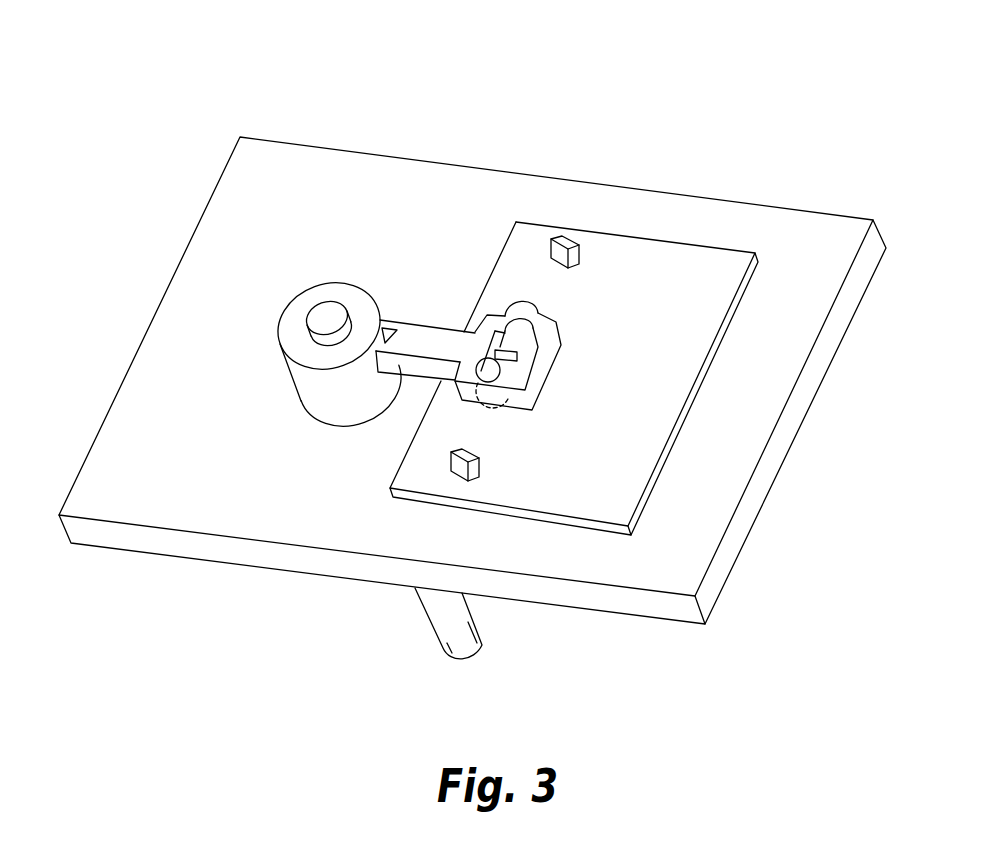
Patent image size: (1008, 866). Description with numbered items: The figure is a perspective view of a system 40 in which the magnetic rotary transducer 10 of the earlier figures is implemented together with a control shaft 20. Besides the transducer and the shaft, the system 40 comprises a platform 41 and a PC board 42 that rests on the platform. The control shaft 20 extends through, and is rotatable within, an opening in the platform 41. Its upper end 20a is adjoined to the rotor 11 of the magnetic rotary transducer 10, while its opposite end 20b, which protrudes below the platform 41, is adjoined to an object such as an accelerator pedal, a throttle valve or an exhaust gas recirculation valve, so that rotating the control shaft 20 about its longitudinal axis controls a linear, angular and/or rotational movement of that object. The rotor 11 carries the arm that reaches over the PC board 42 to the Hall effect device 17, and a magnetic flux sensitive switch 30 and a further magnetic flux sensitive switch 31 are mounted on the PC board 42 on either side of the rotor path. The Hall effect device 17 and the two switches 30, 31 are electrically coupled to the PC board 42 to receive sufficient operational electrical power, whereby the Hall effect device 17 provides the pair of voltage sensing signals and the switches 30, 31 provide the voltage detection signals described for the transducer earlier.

The magnetic rotary transducer 10 is at (447, 218).
The rotor 11 is at (368, 280).
The Hall effect device 17 is at (533, 368).
The control shaft 20 is at (490, 617).
The end of control shaft 20a is at (322, 313).
The end of control shaft 20b is at (448, 643).
The magnetic flux sensitive switch 30 is at (553, 234).
The magnetic flux sensitive switch 31 is at (457, 462).
The system 40 is at (685, 110).
The platform 41 is at (838, 210).
The PC board 42 is at (700, 417).